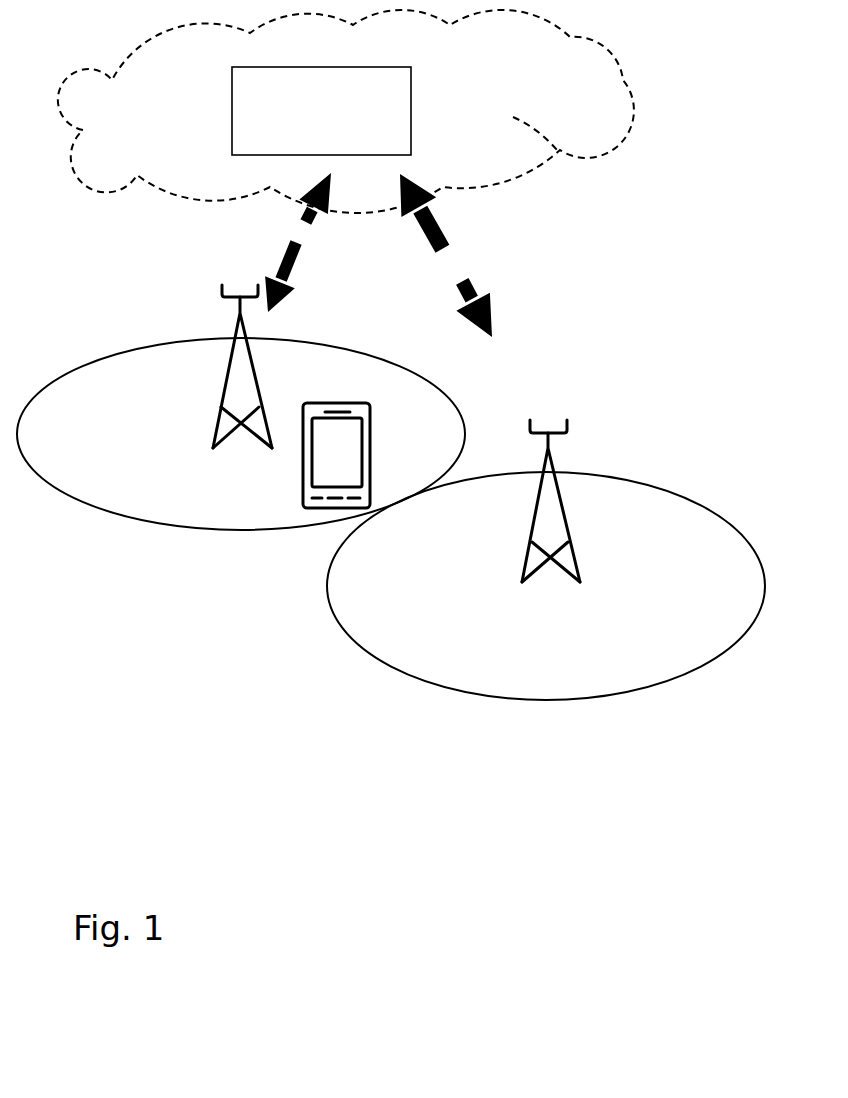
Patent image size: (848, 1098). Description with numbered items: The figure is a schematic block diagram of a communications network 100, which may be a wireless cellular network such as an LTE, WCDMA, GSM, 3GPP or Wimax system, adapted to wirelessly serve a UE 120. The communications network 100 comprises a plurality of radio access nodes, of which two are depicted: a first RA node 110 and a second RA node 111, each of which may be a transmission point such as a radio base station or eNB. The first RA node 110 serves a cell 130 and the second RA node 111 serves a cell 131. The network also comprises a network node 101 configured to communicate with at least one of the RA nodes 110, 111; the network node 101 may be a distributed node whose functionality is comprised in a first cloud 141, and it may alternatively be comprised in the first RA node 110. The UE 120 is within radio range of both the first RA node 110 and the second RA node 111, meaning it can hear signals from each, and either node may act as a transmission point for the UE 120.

The communications network 100 is at (476, 773).
The network node 101 is at (300, 126).
The first radio access node 110 is at (238, 311).
The second radio access node 111 is at (577, 555).
The user equipment 120 is at (303, 455).
The cell 130 is at (147, 450).
The cell 131 is at (587, 641).
The first cloud 141 is at (190, 126).